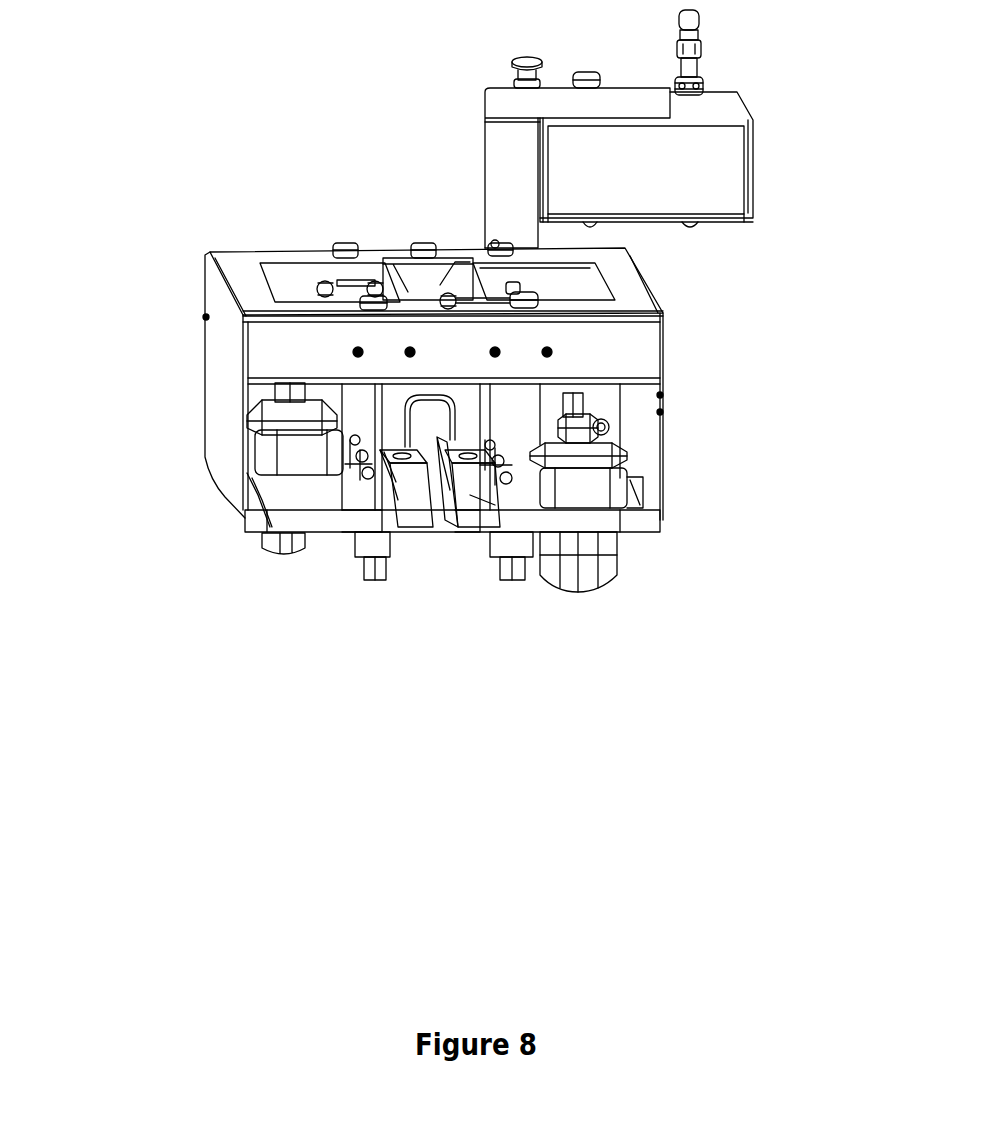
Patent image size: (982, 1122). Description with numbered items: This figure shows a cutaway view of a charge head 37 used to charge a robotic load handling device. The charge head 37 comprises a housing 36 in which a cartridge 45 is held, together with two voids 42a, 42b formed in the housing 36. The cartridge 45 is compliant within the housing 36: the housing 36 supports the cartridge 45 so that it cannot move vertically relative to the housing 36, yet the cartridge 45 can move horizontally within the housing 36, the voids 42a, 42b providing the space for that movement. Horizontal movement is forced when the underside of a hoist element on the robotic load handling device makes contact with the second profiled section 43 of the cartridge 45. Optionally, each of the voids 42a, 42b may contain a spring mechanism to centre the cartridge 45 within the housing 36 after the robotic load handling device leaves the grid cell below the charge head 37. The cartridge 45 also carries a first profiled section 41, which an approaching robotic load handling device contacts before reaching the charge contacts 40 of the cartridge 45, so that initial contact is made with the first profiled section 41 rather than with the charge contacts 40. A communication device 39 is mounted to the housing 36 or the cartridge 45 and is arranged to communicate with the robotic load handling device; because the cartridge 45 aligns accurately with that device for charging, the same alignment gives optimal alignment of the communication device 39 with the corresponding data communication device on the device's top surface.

The charge head 37 is at (204, 233).
The communication device 39 is at (685, 167).
The housing 36 is at (228, 403).
The void 42a is at (250, 515).
The void 42b is at (645, 507).
The charge contacts 40 is at (377, 573).
The cartridge 45 is at (343, 518).
The second profiled section 43 is at (465, 518).
The first profiled section 41 is at (483, 498).